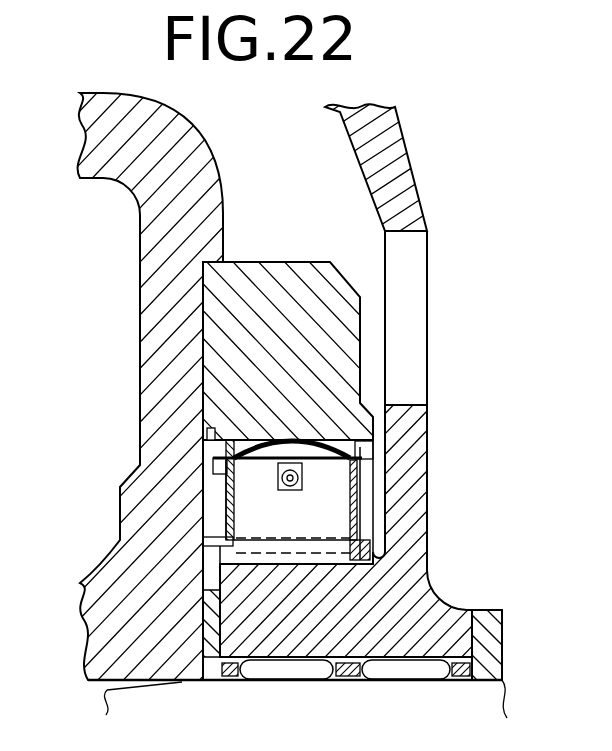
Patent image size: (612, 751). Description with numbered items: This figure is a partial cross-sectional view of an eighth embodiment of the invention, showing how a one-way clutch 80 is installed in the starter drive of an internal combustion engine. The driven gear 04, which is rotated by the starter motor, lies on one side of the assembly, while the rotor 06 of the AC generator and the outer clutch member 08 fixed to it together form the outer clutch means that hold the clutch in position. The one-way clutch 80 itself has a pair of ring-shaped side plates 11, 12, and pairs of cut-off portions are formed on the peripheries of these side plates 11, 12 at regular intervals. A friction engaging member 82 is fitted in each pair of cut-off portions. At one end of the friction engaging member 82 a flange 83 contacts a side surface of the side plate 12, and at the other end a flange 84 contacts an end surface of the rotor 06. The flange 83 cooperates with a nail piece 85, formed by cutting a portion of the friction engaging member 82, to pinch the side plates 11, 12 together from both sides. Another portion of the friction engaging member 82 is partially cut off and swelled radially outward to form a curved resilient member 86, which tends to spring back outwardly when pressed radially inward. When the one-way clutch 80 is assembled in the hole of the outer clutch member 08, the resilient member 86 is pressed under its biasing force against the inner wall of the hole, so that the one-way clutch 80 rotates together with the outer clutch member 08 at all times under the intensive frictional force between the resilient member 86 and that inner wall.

The driven gear 04 is at (418, 187).
The rotor 06 is at (146, 233).
The outer clutch member 08 is at (291, 269).
The side plate 11 is at (228, 510).
The side plate 12 is at (360, 527).
The one-way clutch 80 is at (358, 508).
The friction engaging member 82 is at (362, 446).
The flange 83 is at (373, 460).
The flange 84 is at (205, 433).
The nail piece 85 is at (218, 470).
The resilient member 86 is at (312, 440).